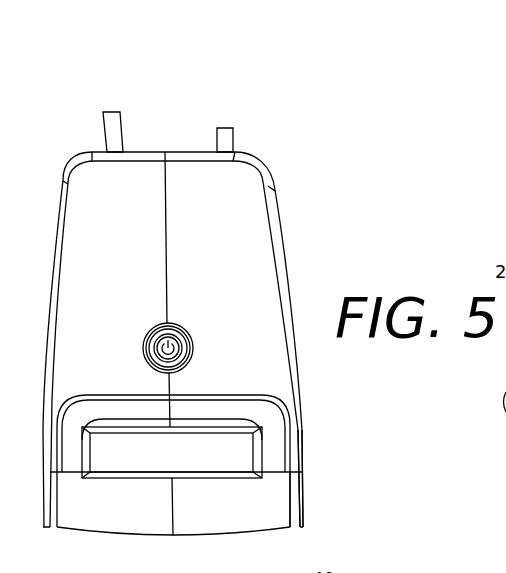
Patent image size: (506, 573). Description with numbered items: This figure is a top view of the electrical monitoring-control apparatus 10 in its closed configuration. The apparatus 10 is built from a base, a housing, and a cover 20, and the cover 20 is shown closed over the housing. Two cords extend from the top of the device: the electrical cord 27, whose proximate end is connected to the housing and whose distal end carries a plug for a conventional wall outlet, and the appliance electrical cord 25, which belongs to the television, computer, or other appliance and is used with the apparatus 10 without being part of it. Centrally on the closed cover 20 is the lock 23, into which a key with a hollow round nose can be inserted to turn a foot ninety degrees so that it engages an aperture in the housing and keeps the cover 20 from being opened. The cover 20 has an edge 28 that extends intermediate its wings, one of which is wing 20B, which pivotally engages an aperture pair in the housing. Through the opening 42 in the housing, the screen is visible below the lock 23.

The electrical monitoring-control apparatus 10 is at (302, 278).
The appliance electrical cord 25 is at (123, 150).
The electrical cord 27 is at (232, 128).
The cover 20 is at (251, 339).
The wing 20B is at (302, 505).
The lock 23 is at (154, 343).
The edge 28 is at (115, 403).
The opening 42 is at (210, 437).